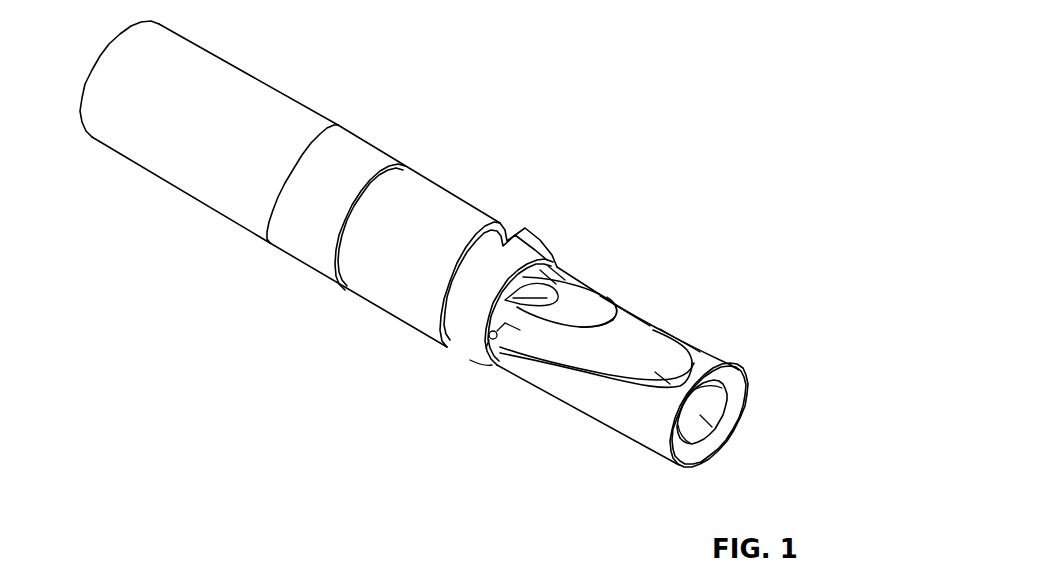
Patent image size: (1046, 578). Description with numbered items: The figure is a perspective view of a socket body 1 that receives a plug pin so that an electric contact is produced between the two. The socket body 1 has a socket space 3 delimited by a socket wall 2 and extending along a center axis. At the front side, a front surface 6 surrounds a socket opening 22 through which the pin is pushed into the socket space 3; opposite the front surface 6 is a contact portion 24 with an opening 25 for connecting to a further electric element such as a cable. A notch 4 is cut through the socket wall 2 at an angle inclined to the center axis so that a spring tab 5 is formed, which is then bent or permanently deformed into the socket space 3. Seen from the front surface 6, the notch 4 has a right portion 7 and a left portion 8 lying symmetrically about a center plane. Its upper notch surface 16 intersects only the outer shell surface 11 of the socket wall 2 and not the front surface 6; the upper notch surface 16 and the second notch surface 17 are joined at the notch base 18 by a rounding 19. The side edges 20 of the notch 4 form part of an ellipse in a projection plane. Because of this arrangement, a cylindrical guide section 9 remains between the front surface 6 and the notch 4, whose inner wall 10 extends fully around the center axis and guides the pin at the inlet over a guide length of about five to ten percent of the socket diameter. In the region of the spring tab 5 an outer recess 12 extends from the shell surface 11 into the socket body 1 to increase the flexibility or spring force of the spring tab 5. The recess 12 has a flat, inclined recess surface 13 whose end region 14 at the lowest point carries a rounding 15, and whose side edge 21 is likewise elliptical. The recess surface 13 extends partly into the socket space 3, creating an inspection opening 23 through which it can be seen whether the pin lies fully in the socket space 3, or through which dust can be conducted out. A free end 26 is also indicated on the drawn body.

The socket body 1 is at (437, 190).
The socket wall 2 is at (630, 420).
The socket space 3 is at (703, 410).
The notch 4 is at (513, 338).
The spring tab 5 is at (643, 318).
The front surface 6 is at (707, 463).
The right portion 7 is at (667, 337).
The left portion 8 is at (555, 362).
The guide section 9 is at (707, 397).
The inner wall 10 is at (688, 422).
The shell surface 11 is at (595, 363).
The outer recess 12 is at (575, 295).
The recess surface 13 is at (593, 303).
The end region 14 is at (552, 275).
The rounding 15 is at (560, 272).
The upper notch surface 16 is at (543, 317).
The notch surface 17 is at (663, 377).
The notch base 18 is at (467, 352).
The rounding 19 is at (487, 344).
The side edges 20 is at (672, 333).
The side edge 21 is at (602, 315).
The socket opening 22 is at (719, 434).
The inspection opening 23 is at (525, 292).
The contact portion 24 is at (247, 107).
The opening 25 is at (143, 120).
The free end 26 is at (687, 353).